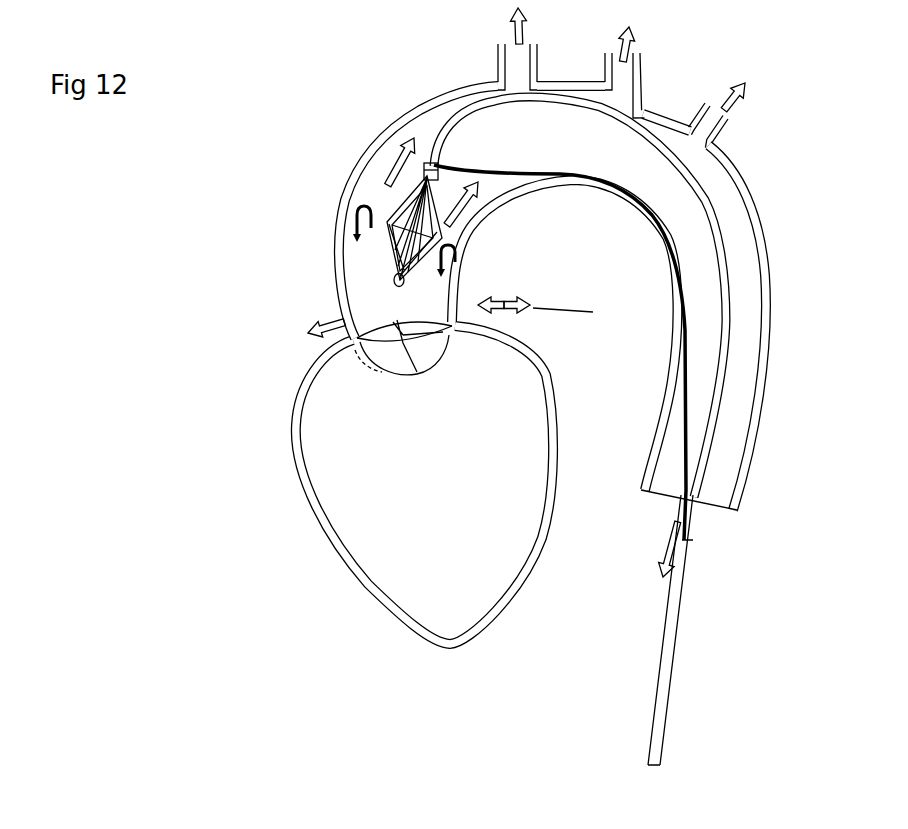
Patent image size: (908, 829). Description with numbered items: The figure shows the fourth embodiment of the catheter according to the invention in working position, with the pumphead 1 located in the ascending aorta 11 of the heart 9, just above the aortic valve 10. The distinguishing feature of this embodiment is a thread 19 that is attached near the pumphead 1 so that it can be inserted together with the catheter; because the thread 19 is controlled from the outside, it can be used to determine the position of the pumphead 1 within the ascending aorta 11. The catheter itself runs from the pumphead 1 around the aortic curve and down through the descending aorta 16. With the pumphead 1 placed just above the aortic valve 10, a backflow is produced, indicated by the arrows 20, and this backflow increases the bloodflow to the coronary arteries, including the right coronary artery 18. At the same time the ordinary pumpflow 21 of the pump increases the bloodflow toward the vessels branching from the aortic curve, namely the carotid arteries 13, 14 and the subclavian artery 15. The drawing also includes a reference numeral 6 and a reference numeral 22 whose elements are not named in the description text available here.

The pumphead 1 is at (382, 198).
The dissection membrane 6 is at (714, 211).
The heart 9 is at (333, 553).
The aortic valve 10 is at (402, 368).
The ascending aorta 11 is at (368, 297).
The carotid artery 13 is at (515, 60).
The carotid artery 14 is at (640, 66).
The subclavian artery 15 is at (733, 118).
The descending aorta 16 is at (746, 346).
The right coronary artery 18 is at (312, 334).
The thread 19 is at (516, 176).
The arrows 20 is at (356, 222).
The ordinary pumpflow 21 is at (398, 160).
The distal tip 22 is at (394, 276).